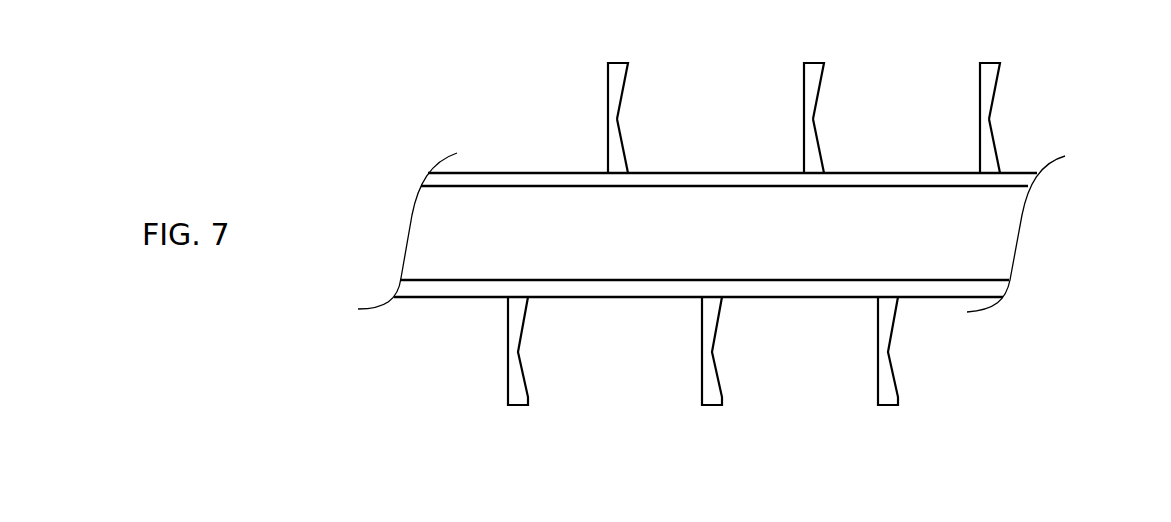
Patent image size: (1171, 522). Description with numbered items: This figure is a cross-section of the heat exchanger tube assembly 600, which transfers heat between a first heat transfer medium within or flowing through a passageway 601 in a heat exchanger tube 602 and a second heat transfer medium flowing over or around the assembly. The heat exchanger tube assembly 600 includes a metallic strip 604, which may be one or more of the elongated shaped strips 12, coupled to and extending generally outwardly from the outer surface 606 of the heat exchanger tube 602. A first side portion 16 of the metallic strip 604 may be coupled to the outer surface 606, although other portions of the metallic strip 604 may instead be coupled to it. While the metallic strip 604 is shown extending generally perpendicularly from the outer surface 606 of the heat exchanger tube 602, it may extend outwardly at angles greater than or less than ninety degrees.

The heat exchanger tube assembly 600 is at (355, 142).
The heat exchanger tube 602 is at (1025, 198).
The passageway 601 is at (824, 245).
The outer surface 606 is at (512, 160).
The elongated shaped strip 12 is at (628, 63).
The first side portion 16 is at (634, 152).
The metallic strip 604 is at (528, 397).